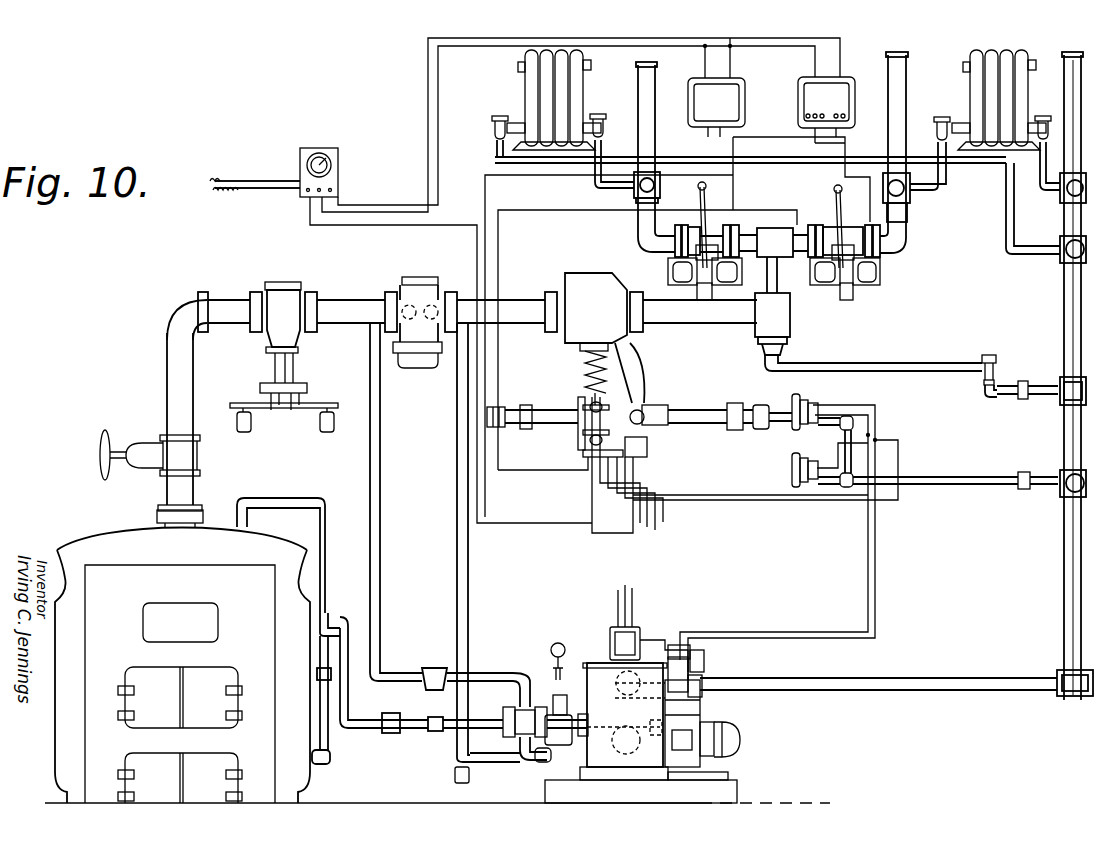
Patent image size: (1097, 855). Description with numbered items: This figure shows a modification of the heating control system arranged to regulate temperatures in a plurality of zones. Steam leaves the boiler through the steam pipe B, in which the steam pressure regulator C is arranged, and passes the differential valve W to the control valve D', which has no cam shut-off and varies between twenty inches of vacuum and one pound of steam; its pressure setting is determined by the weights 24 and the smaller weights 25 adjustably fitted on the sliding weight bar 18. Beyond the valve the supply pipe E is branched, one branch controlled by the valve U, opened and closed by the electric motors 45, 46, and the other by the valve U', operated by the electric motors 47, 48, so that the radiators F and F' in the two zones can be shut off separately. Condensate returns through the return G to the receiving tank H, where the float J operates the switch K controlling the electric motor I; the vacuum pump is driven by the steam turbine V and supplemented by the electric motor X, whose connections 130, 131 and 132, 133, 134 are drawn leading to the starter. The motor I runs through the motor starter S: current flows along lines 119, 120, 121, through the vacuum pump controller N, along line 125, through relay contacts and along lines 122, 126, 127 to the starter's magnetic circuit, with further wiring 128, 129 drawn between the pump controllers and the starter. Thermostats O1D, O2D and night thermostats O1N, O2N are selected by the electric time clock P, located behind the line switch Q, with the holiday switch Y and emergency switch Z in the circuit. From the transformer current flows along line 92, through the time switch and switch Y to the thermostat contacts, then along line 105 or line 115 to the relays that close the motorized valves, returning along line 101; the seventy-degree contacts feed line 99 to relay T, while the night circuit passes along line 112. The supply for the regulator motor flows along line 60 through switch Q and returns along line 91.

The line 112 is at (428, 57).
The line 60 is at (278, 180).
The line 91 is at (268, 190).
The electric time clock P is at (325, 148).
The line switch Q is at (340, 163).
The emergency switch Z is at (342, 184).
The holiday switch Y is at (300, 203).
The line 99 is at (488, 180).
The line 101 is at (499, 218).
The line 92 is at (396, 226).
The line 105 is at (735, 186).
The line 115 is at (840, 179).
The steam pressure regulator C is at (285, 290).
The differential valve W is at (417, 310).
The steam pipe B is at (167, 410).
The receiving tank H is at (590, 695).
The valve D' is at (604, 339).
The supply pipe E is at (714, 325).
The valve U is at (629, 240).
The valve U' is at (911, 237).
The electric motor 45 is at (668, 270).
The electric motor 46 is at (720, 286).
The electric motor 47 is at (822, 286).
The electric motor 48 is at (882, 278).
The sliding weight bar 18 is at (565, 405).
The weights 24 is at (545, 425).
The smaller weights 25 is at (745, 427).
The electric motor I is at (916, 434).
The vacuum pump controller N is at (802, 470).
The line 121 is at (841, 451).
The conductor 128 is at (868, 405).
The conductor 129 is at (878, 407).
The line 122 is at (743, 495).
The line 125 is at (745, 501).
The return G is at (1020, 376).
The radiators F is at (543, 100).
The radiator F' is at (988, 100).
The thermostat O1D is at (694, 78).
The thermostat O1N is at (772, 75).
The thermostat O2D is at (743, 128).
The thermostat O2N is at (842, 130).
The conductor 132 is at (616, 585).
The conductor 133 is at (623, 590).
The conductor 134 is at (630, 598).
The motor starter S is at (641, 636).
The line 119 is at (660, 642).
The conductor 130 is at (690, 648).
The conductor 131 is at (702, 660).
The switch K is at (703, 677).
The line 127 is at (634, 689).
The float J is at (641, 733).
The steam turbine V is at (497, 727).
The electric motor X is at (742, 741).
The line 126 is at (843, 632).
The line 120 is at (861, 640).